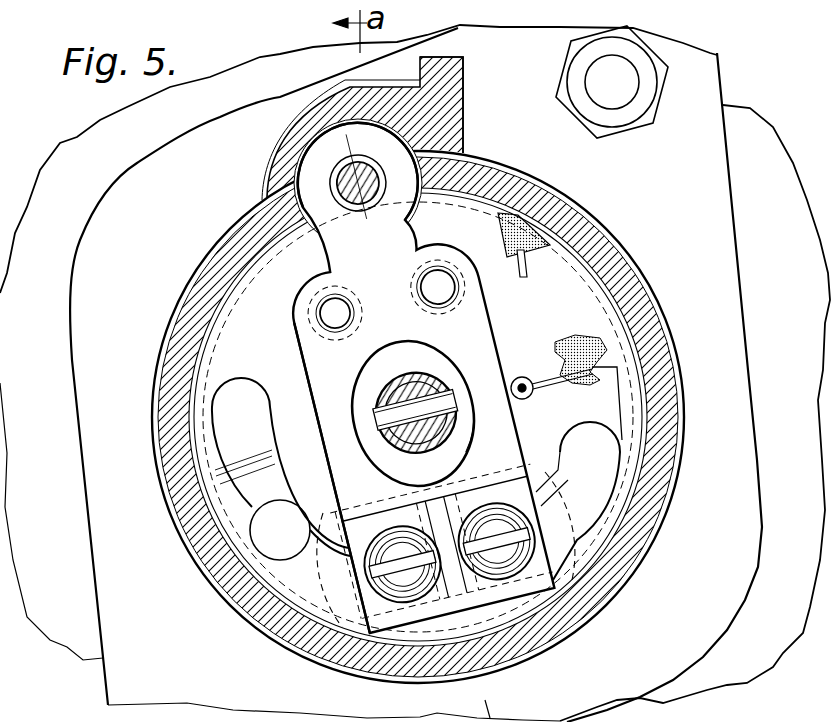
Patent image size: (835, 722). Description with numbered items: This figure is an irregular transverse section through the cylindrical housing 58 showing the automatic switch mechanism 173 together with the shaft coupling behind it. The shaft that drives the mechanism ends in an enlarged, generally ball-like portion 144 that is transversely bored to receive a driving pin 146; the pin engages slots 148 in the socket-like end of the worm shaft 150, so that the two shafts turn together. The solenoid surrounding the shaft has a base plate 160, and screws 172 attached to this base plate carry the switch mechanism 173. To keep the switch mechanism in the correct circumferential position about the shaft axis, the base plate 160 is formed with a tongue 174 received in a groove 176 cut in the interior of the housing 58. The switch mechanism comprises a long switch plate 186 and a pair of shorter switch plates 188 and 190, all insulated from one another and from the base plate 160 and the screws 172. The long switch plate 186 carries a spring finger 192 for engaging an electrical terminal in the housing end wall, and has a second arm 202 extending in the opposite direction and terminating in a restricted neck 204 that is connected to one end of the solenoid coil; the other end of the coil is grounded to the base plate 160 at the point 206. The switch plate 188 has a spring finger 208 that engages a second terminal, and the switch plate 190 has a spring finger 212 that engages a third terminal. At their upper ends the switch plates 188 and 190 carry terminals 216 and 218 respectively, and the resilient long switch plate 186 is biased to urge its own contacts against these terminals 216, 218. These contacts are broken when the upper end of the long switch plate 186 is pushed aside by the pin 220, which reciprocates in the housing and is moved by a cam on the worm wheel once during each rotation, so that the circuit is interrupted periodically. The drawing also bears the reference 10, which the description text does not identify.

The bracket plate 10 is at (238, 413).
The cylindrical housing 58 is at (647, 547).
The ball-like end 144 is at (422, 436).
The driving pin 146 is at (412, 396).
The slots 148 is at (460, 401).
The worm shaft 150 is at (487, 435).
The base plate 160 is at (597, 317).
The screws 172 is at (450, 608).
The automatic switch mechanism 173 is at (493, 579).
The tongue 174 is at (289, 174).
The groove 176 is at (320, 133).
The long switch plate 186 is at (462, 153).
The switch plate 188 is at (276, 422).
The switch plate 190 is at (435, 359).
The spring finger 192 is at (218, 408).
The second arm 202 is at (608, 393).
The restricted neck 204 is at (627, 370).
The ground connection 206 is at (568, 250).
The spring finger 208 is at (270, 538).
The spring finger 212 is at (600, 460).
The terminal 216 is at (303, 336).
The terminal 218 is at (447, 259).
The pin 220 is at (361, 196).